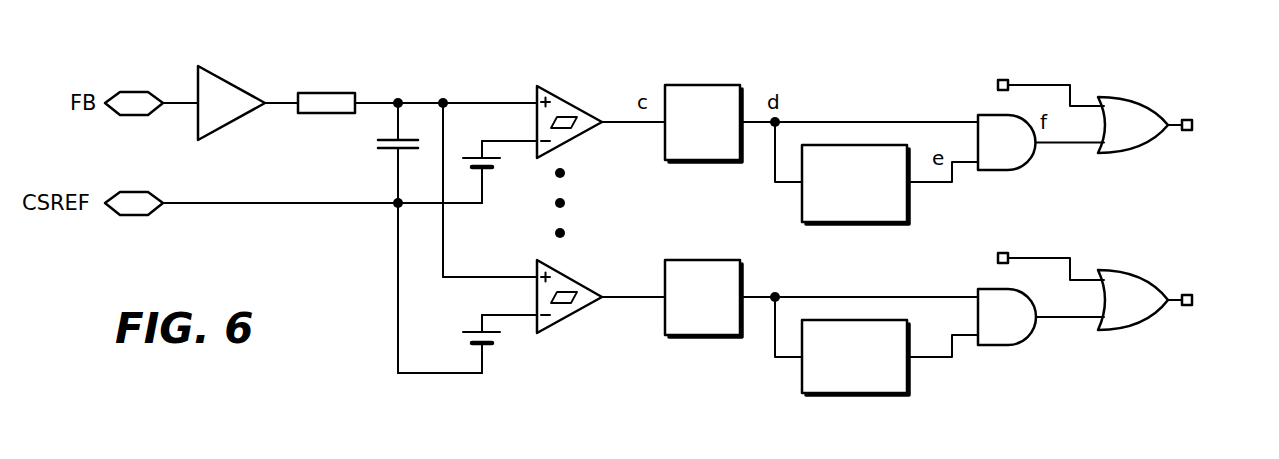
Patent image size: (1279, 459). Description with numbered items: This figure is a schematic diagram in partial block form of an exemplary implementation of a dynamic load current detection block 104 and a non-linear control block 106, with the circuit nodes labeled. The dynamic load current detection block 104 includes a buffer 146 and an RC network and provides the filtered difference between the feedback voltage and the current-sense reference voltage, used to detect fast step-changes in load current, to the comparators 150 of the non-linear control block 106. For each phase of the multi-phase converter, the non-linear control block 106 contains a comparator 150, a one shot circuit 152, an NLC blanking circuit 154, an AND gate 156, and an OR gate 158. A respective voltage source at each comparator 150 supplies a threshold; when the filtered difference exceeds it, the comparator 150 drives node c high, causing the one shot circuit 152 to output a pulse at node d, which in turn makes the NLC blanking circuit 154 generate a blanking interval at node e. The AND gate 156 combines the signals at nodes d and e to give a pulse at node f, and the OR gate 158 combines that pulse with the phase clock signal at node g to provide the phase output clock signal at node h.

The dynamic load current detection block 104 is at (338, 58).
The non-linear control block 106 is at (1100, 50).
The buffer 146 is at (214, 68).
The comparator 150 is at (547, 90).
The one shot circuit 152 is at (683, 85).
The non-linear control (NLC) blanking circuit 154 is at (877, 222).
The AND gate 156 is at (1002, 170).
The OR gate 158 is at (1110, 97).